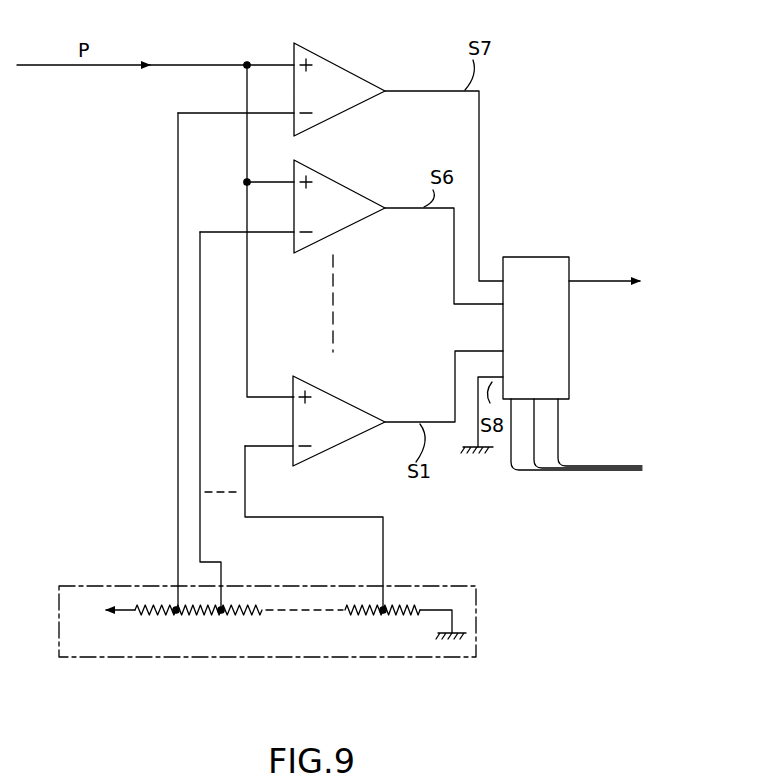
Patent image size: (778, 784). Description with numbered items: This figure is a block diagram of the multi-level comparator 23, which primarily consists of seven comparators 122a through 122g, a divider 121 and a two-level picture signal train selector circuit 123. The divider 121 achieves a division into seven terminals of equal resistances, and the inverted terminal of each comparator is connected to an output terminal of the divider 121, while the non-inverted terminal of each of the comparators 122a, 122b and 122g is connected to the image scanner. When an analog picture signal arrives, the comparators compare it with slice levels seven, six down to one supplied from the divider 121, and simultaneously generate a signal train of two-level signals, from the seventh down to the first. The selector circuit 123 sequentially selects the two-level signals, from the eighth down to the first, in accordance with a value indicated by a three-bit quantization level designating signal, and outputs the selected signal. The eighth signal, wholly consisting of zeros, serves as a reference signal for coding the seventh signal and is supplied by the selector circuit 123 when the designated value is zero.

The comparator 122a is at (322, 53).
The comparator 122b is at (333, 178).
The comparator 122g is at (341, 398).
The two-level picture signal train selector circuit 123 is at (547, 257).
The divider 121 is at (476, 645).
The multi-level comparator 23 is at (462, 698).